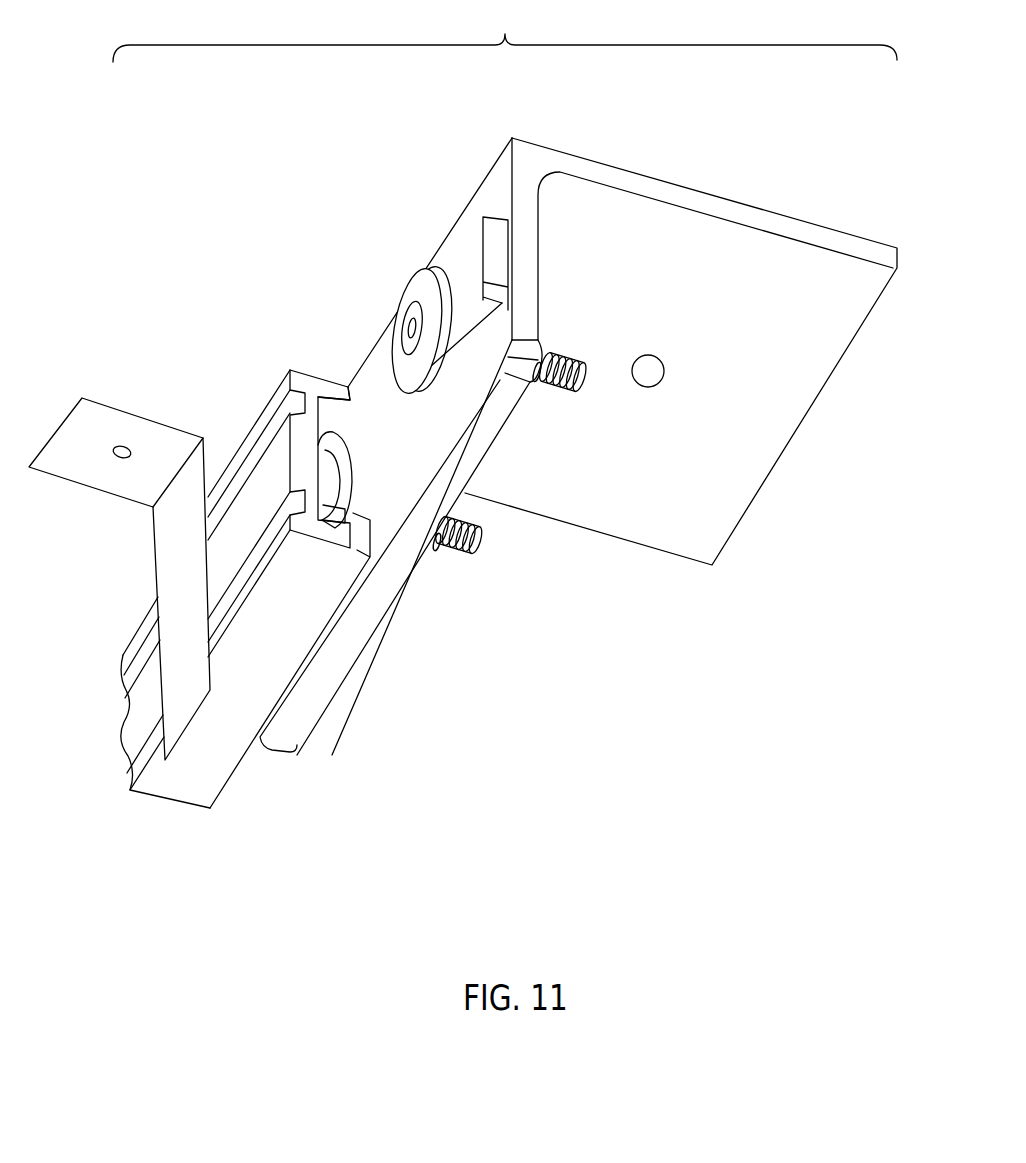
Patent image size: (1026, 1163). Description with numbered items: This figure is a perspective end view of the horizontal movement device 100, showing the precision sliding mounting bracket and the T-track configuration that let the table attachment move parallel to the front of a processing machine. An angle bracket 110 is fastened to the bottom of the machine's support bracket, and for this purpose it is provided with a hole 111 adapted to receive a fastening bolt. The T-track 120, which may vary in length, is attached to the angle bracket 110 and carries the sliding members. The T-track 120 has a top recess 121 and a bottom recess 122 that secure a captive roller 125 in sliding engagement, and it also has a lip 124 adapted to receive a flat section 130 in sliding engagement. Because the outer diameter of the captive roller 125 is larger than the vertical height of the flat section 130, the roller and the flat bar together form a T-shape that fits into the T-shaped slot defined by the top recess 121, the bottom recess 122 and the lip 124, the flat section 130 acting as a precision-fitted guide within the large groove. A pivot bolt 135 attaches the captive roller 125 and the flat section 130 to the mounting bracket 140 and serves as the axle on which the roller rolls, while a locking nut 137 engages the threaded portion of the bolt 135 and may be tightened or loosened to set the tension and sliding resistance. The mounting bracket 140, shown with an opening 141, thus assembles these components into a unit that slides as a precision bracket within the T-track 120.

The hanger assembly 100 is at (505, 31).
The angle bracket 110 is at (175, 440).
The mounting hole 111 is at (98, 447).
The T-track 120 is at (195, 790).
The top recess 121 is at (330, 408).
The bottom recess 122 is at (335, 523).
The lip 124 is at (362, 520).
The captive roller 125 is at (425, 290).
The flat section 130 is at (495, 228).
The bolt 135 is at (405, 318).
The nut 137 is at (537, 380).
The mounting bracket 140 is at (533, 157).
The plate hole 141 is at (648, 370).